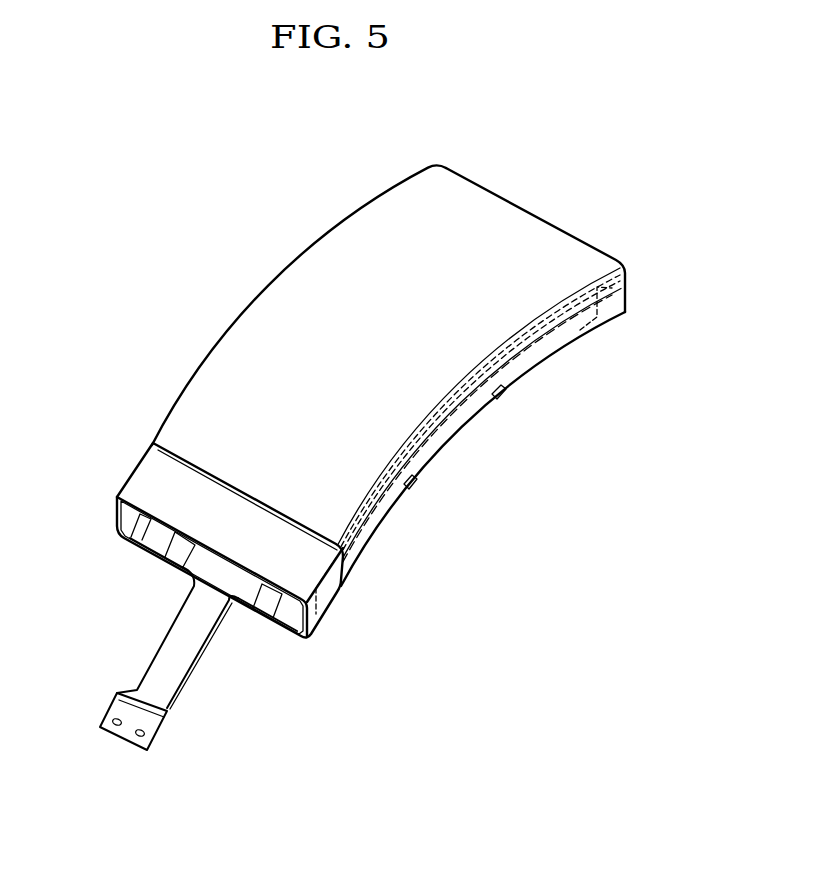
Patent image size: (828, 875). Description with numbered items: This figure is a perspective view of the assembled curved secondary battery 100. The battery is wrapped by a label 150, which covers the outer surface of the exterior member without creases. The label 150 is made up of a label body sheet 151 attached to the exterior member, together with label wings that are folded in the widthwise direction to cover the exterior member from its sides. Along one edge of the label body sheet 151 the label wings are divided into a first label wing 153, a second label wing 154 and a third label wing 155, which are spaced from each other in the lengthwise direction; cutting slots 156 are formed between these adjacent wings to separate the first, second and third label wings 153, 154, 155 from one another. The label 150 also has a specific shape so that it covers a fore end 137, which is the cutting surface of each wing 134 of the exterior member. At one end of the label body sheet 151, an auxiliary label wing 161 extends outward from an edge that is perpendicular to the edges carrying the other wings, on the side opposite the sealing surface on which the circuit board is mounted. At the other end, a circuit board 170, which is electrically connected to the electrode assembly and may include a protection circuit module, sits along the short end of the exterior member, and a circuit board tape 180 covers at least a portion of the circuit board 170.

The curved secondary battery 100 is at (117, 237).
The label 150 is at (297, 262).
The label body sheet 151 is at (397, 344).
The auxiliary label wing 161 is at (537, 208).
The first label wing 153 is at (583, 332).
The second label wing 154 is at (452, 440).
The third label wing 155 is at (373, 540).
The wing 134 is at (533, 347).
The fore end 137 is at (612, 292).
The cutting slot 156 is at (497, 400).
The circuit board tape 180 is at (143, 477).
The circuit board 170 is at (160, 662).